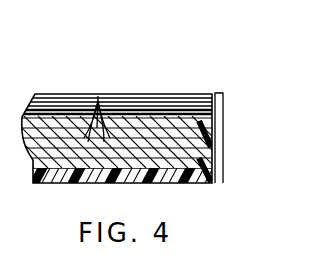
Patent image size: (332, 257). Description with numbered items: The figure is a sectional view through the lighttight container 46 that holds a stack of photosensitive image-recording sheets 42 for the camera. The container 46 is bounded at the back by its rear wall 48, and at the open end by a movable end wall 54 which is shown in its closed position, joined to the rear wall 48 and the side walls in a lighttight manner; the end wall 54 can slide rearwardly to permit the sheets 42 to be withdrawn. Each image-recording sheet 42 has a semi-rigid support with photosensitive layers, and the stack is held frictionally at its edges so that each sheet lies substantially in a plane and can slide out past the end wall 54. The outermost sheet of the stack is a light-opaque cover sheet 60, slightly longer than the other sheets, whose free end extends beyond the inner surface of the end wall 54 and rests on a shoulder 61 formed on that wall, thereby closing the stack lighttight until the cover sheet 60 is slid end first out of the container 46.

The image-recording sheet 42 is at (98, 96).
The lighttight container 46 is at (162, 94).
The rear wall 48 is at (142, 174).
The movable end wall 54 is at (213, 165).
The cover sheet 60 is at (181, 117).
The shoulder 61 is at (213, 133).